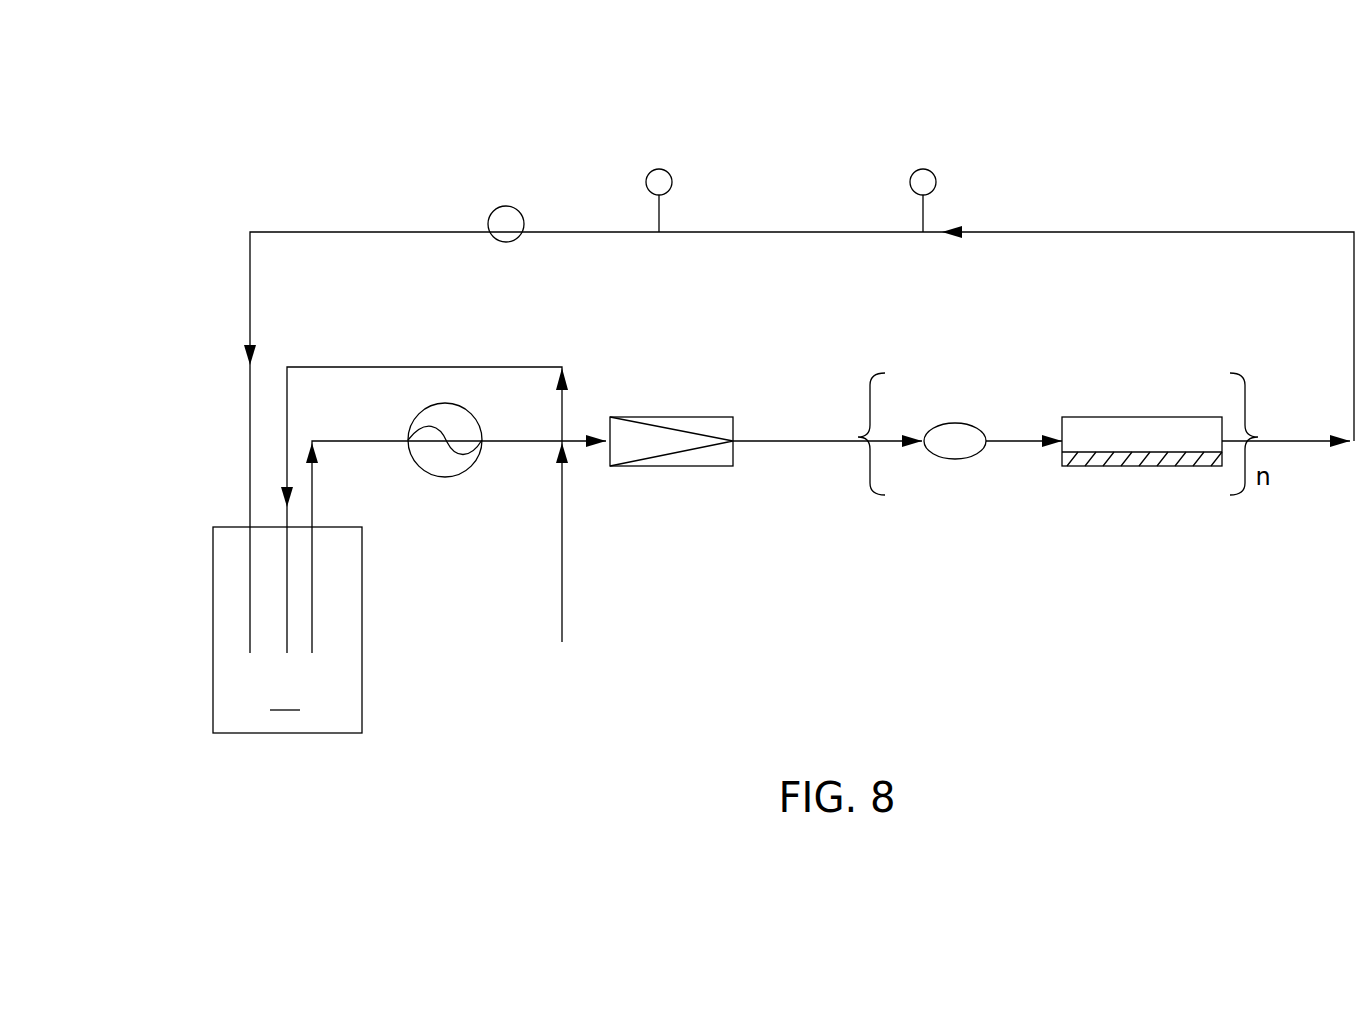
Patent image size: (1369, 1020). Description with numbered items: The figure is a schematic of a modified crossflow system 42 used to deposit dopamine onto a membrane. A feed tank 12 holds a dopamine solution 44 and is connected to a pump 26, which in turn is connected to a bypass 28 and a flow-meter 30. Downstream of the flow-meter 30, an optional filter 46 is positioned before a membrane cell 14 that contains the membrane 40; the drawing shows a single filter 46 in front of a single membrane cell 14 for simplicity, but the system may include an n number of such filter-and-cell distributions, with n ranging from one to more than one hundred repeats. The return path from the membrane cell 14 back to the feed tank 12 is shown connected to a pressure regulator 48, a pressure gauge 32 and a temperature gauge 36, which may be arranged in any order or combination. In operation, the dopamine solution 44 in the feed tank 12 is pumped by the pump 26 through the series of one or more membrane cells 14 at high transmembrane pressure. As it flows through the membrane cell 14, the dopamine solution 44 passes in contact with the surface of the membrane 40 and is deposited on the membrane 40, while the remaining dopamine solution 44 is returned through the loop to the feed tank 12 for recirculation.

The feed tank 12 is at (213, 593).
The membrane cell 14 is at (1157, 417).
The pump 26 is at (445, 478).
The bypass 28 is at (427, 522).
The flow-meter 30 is at (703, 466).
The pressure gauge 32 is at (659, 169).
The temperature gauge 36 is at (923, 169).
The membrane 40 is at (1137, 457).
The modified crossflow system 42 is at (788, 122).
The dopamine solution 44 is at (285, 693).
The filter 46 is at (955, 423).
The pressure regulator 48 is at (506, 206).